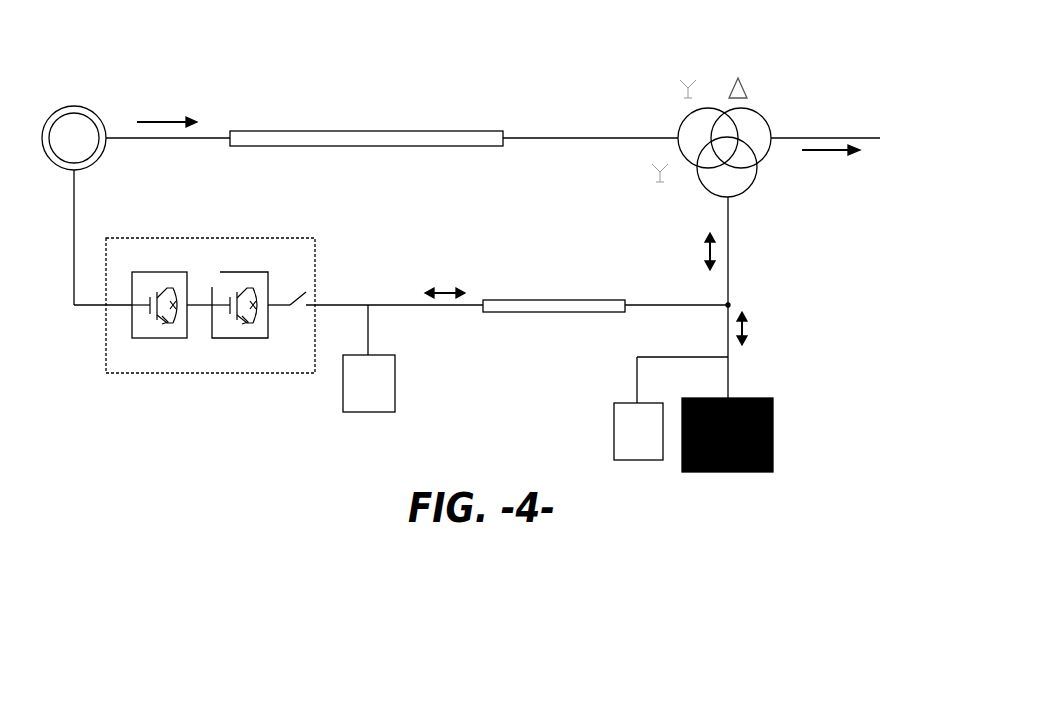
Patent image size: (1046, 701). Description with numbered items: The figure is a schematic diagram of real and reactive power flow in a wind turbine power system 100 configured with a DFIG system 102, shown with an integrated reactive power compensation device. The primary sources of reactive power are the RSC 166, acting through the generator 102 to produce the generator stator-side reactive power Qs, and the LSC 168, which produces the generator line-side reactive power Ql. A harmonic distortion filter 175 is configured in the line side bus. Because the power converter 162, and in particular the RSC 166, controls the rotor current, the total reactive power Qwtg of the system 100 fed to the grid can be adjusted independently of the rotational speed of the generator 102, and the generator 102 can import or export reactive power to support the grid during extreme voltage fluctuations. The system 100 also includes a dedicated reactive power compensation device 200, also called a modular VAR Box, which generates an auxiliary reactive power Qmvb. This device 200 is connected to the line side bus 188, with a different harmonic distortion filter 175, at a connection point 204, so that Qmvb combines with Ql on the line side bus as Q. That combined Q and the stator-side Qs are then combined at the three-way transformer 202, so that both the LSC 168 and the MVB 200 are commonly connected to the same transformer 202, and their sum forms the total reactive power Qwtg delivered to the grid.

The wind turbine power system 100 is at (420, 55).
The DFIG system 102 is at (72, 106).
The power converter 162 is at (202, 402).
The RSC 166 is at (148, 341).
The LSC 168 is at (240, 341).
The harmonic distortion filter 175 is at (396, 372).
The line side bus 188 is at (635, 300).
The reactive power compensation device 200 is at (773, 410).
The three-way transformer 202 is at (708, 108).
The connection point 204 is at (727, 310).